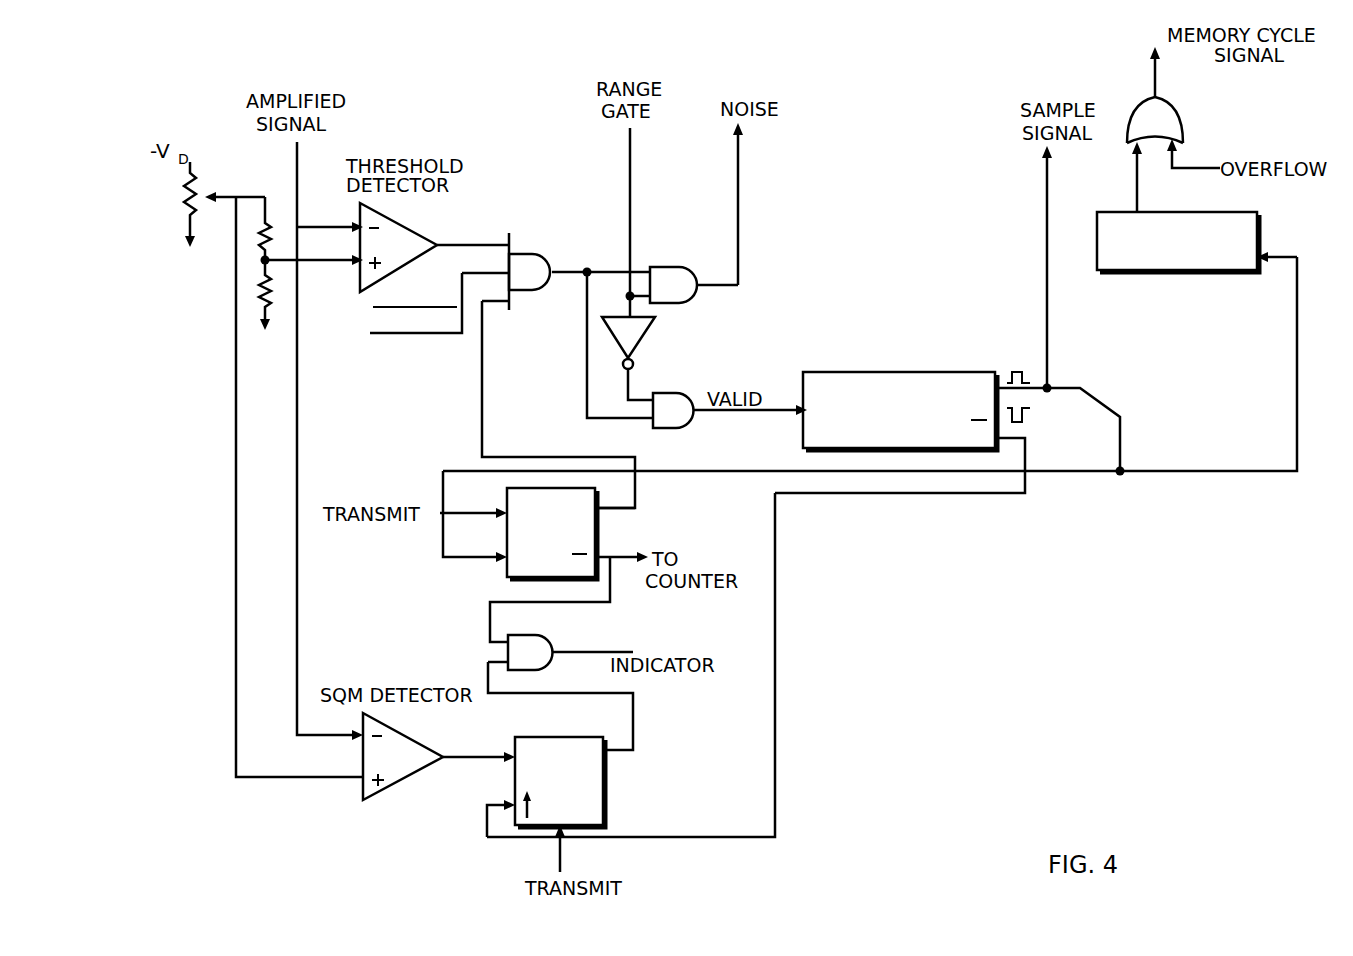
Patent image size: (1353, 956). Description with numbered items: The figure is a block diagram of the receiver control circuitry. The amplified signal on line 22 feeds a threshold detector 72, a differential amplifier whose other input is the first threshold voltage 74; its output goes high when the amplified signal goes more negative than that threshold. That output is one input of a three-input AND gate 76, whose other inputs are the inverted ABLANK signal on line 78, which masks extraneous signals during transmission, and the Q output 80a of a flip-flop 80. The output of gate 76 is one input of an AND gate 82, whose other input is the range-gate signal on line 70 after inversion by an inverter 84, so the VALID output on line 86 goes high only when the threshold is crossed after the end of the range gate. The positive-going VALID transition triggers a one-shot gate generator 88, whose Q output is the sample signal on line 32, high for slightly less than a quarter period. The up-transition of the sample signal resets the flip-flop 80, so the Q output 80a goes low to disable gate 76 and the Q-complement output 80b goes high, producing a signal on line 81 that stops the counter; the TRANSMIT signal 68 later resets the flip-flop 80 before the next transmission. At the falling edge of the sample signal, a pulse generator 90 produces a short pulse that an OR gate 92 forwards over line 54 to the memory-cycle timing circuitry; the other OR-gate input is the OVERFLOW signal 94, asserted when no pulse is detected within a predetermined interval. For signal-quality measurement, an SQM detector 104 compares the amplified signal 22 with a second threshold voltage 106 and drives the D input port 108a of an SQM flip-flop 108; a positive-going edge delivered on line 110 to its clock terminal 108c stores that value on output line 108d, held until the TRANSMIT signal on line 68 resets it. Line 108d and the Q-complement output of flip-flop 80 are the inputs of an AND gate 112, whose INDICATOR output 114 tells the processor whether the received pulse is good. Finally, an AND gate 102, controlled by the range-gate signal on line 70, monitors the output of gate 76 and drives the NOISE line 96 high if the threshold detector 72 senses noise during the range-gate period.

The amplified signal line 22 is at (297, 160).
The sample signal line 32 is at (1044, 197).
The overflow output line 54 is at (1152, 73).
The TRANSMIT signal line 68 is at (452, 506).
The range-gate signal line 70 is at (630, 158).
The threshold detector 72 is at (410, 221).
The first threshold voltage 74 is at (265, 261).
The three-input AND gate 76 is at (537, 253).
The inverted ABLANK signal line 78 is at (392, 335).
The flip-flop 80 is at (535, 488).
The Q output 80a is at (600, 511).
The flip-flop Q-bar output 80b is at (605, 553).
The counter stop line 81 is at (620, 565).
The AND gate 82 is at (660, 428).
The inverter 84 is at (650, 332).
The VALID output line 86 is at (748, 415).
The gate generator 88 is at (863, 372).
The pulse generator 90 is at (1265, 225).
The OR gate 92 is at (1182, 113).
The overflow signal line 94 is at (1200, 168).
The NOISE signal line 96 is at (740, 166).
The AND gate 102 is at (672, 265).
The SQM detector 104 is at (370, 800).
The second threshold voltage 106 is at (236, 197).
The SQM flip-flop 108 is at (606, 790).
The D input port 108a is at (506, 752).
The clock terminal 108c is at (506, 806).
The output line 108d is at (633, 705).
The reset line 110 is at (776, 711).
The AND gate 112 is at (522, 635).
The indicator output line 114 is at (612, 652).